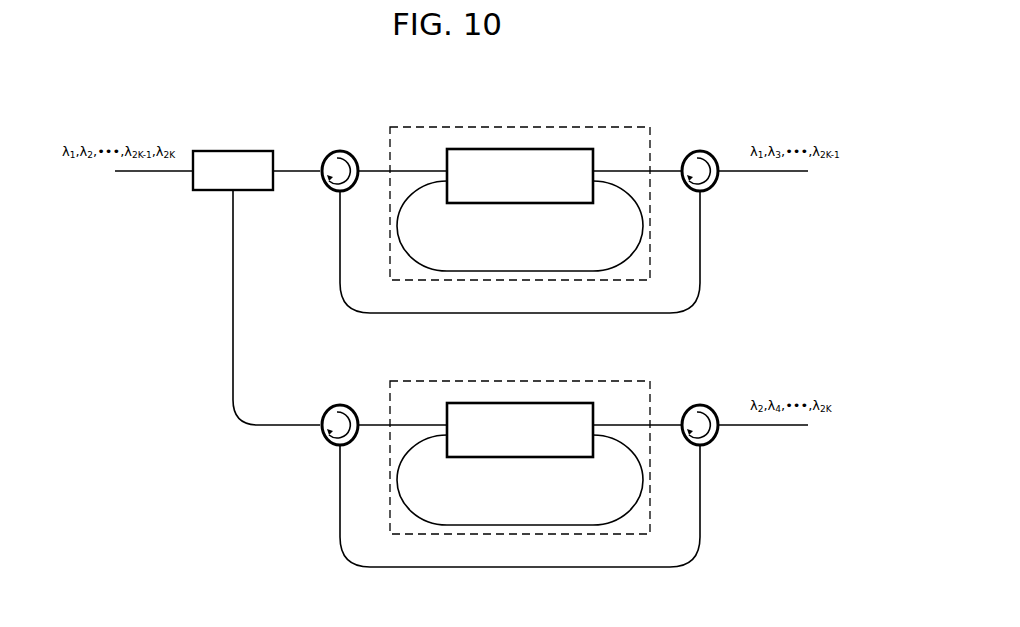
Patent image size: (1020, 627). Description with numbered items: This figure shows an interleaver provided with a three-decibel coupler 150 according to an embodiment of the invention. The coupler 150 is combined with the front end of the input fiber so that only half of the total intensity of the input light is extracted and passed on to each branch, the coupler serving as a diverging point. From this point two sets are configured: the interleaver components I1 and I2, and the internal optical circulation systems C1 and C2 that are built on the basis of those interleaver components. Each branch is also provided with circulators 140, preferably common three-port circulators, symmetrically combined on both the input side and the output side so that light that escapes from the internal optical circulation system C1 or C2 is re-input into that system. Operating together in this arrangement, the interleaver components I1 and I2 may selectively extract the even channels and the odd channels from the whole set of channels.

The 3 dB coupler 150 is at (233, 151).
The circulator 140 is at (340, 151).
The interleaver component I1 is at (522, 149).
The interleaver component I2 is at (522, 403).
The internal optical circulation system C1 is at (597, 127).
The internal optical circulation system C2 is at (597, 381).